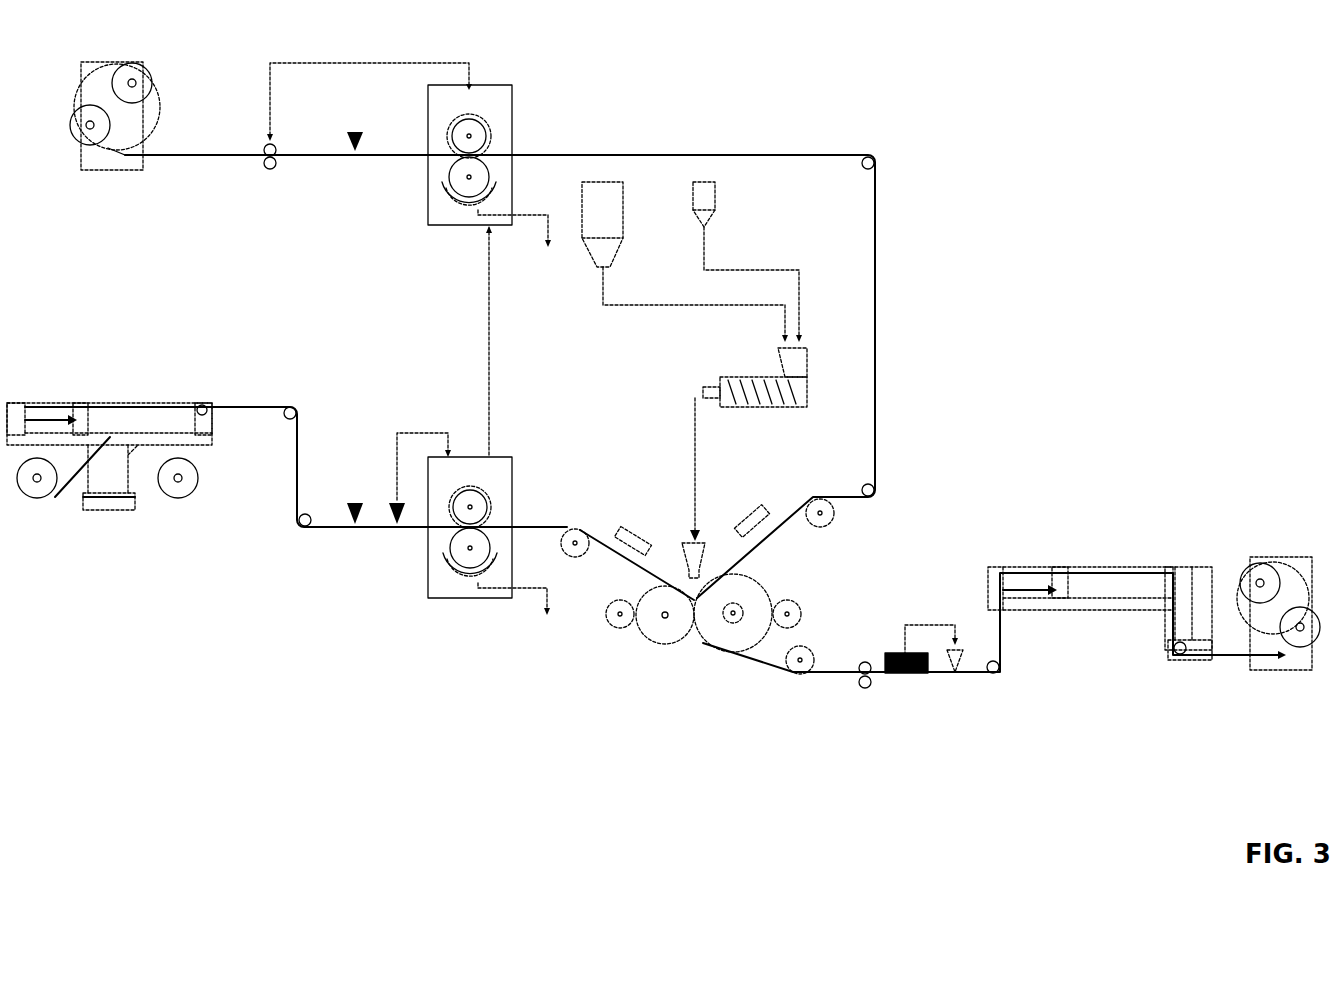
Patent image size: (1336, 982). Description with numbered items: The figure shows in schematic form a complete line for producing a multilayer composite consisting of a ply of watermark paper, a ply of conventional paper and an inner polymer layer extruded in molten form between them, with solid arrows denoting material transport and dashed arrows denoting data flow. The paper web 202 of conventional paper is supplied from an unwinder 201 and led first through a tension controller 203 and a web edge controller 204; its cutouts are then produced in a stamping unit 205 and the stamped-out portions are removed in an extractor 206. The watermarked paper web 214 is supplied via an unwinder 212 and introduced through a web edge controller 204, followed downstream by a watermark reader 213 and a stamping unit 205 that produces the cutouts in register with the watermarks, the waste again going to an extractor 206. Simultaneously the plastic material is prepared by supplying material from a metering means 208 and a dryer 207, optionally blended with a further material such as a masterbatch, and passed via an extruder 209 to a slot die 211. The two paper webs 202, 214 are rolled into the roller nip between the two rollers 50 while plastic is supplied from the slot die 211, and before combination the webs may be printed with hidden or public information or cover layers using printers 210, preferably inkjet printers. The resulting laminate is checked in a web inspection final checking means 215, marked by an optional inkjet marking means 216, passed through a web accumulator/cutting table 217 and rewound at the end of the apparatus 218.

The rollers 50 is at (660, 630).
The unwinder 201 is at (115, 142).
The paper web 202 is at (204, 133).
The tension controller 203 is at (357, 142).
The web edge controller 204 is at (355, 503).
The stamping unit 205 is at (465, 365).
The extractor 206 is at (525, 438).
The dryer 207 is at (685, 262).
The metering means 208 is at (747, 262).
The extruder 209 is at (755, 396).
The printers 210 is at (610, 527).
The slot die 211 is at (690, 540).
The unwinder 212 is at (107, 497).
The watermark reader 213 is at (397, 503).
The paper web 214 is at (159, 443).
The web inspection final checking means 215 is at (885, 655).
The inkjet marking means 216 is at (932, 625).
The web accumulator/cutting table 217 is at (1099, 620).
The rewinder 218 is at (1278, 590).